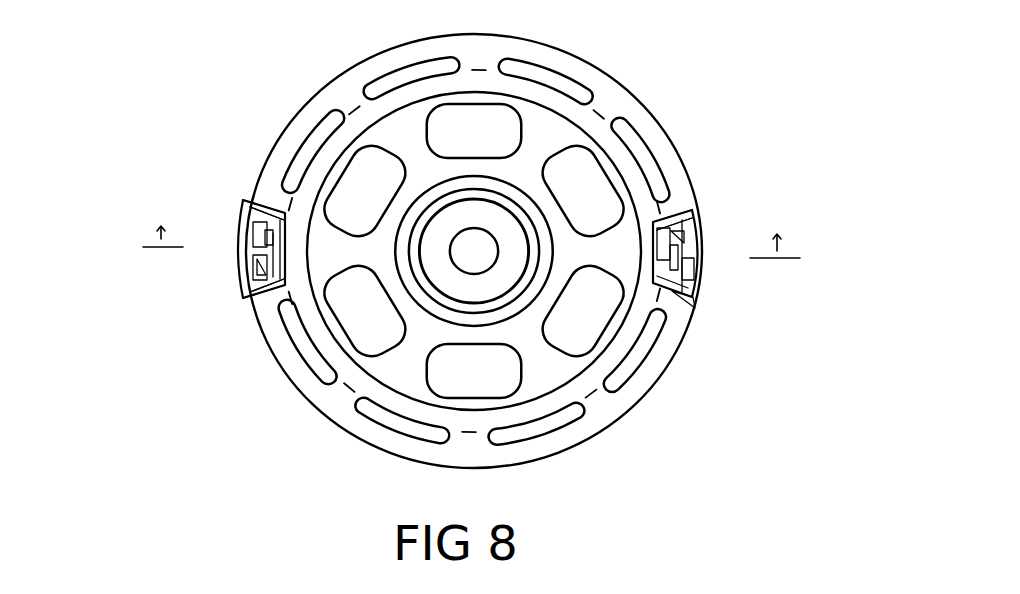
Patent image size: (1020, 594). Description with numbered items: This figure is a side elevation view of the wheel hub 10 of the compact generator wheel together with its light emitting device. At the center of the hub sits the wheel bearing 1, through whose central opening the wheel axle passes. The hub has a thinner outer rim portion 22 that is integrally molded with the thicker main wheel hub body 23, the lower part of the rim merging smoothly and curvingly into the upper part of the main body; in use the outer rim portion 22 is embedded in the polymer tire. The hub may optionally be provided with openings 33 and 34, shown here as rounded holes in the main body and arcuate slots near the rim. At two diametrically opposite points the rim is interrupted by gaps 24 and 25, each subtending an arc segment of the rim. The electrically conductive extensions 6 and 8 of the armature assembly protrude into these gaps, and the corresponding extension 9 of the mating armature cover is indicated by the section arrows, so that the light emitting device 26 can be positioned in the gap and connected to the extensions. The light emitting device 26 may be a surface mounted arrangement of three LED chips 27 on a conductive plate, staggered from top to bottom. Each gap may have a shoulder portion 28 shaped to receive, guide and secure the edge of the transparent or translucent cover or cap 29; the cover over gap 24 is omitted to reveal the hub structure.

The wheel bearing 1 is at (455, 277).
The electrically conductive extension or post 6 is at (246, 199).
The electrically conductive extension or post 8 is at (697, 306).
The electrically conductive extension 9 is at (471, 224).
The wheel hub 10 is at (682, 388).
The outer rim portion 22 is at (666, 123).
The main wheel hub body 23 is at (575, 128).
The gap 24 is at (701, 285).
The gap 25 is at (235, 218).
The light emitting device 26 is at (250, 254).
The LED chips 27 is at (252, 242).
The shoulder portion 28 is at (697, 210).
The transparent or translucent cover or cap 29 is at (243, 300).
The openings 33 is at (463, 137).
The openings 34 is at (545, 80).